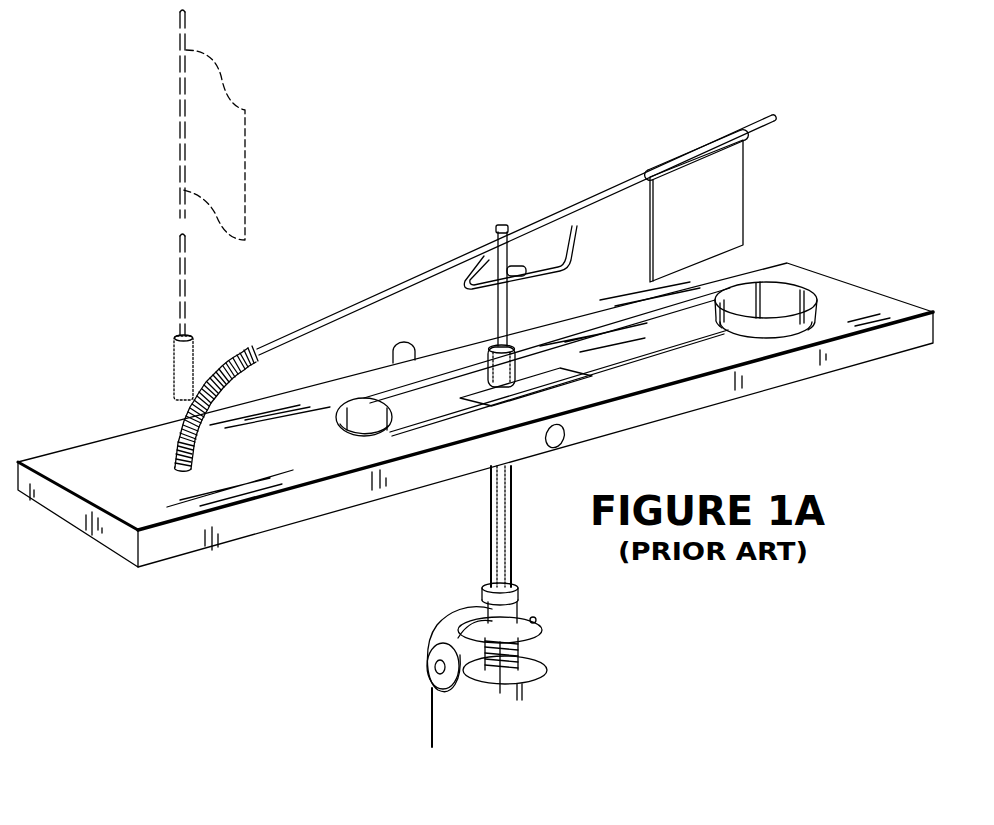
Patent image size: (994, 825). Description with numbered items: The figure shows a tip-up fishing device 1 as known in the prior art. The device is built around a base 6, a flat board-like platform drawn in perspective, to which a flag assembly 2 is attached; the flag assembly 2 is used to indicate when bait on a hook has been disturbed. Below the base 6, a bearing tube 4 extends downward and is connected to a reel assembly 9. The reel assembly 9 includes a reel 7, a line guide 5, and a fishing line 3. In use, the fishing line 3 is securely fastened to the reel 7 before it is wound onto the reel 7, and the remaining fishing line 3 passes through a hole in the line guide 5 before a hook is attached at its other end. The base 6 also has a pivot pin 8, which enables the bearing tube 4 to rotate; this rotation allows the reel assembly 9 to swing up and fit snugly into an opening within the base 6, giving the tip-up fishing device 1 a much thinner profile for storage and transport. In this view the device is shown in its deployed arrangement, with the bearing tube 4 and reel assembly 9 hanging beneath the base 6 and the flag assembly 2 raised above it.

The tip-up fishing device 1 is at (385, 245).
The flag assembly 2 is at (158, 345).
The fishing line 3 is at (428, 717).
The bearing tube 4 is at (490, 531).
The line guide 5 is at (438, 633).
The base 6 is at (390, 380).
The reel 7 is at (530, 612).
The pivot pin 8 is at (564, 447).
The reel assembly 9 is at (472, 636).